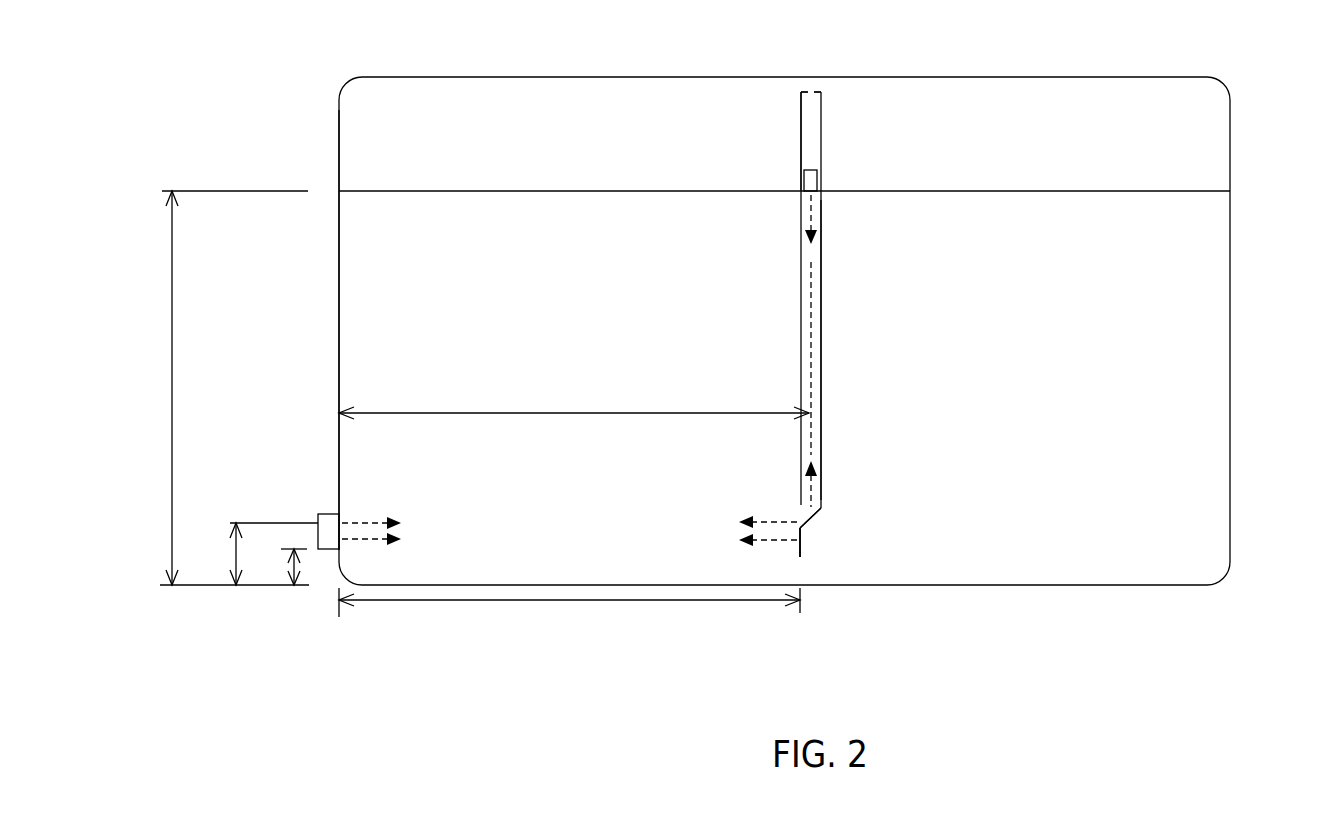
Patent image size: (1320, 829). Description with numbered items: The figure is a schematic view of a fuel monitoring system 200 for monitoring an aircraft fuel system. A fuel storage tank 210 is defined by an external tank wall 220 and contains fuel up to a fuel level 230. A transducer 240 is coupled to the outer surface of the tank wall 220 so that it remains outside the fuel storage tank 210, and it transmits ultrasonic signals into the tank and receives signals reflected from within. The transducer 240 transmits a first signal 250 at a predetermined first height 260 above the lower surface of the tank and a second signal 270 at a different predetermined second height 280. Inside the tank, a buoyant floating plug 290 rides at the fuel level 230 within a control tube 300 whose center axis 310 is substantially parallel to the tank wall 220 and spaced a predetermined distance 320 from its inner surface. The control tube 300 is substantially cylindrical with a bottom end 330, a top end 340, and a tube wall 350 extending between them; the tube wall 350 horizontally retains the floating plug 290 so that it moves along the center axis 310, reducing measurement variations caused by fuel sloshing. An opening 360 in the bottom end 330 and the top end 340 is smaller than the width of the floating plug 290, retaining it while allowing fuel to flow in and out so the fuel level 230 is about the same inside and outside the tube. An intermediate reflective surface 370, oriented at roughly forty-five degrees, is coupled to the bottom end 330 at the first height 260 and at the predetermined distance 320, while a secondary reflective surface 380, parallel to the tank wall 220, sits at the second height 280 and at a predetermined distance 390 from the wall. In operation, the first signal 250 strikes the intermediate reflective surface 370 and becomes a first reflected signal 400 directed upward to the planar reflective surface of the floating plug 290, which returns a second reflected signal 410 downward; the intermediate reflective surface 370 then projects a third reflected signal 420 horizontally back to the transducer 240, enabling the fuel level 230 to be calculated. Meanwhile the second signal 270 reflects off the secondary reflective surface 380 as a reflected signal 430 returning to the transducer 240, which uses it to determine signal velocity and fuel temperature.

The fuel monitoring system 200 is at (957, 646).
The fuel storage tank 210 is at (1255, 142).
The tank wall 220 is at (339, 133).
The fuel level 230 is at (556, 191).
The transducer 240 is at (323, 513).
The first signal 250 is at (370, 519).
The first height 260 is at (234, 555).
The second signal 270 is at (376, 545).
The second height 280 is at (294, 565).
The floating plug 290 is at (823, 180).
The control tube 300 is at (838, 124).
The center axis 310 is at (811, 337).
The predetermined distance 320 is at (574, 401).
The bottom end 330 is at (838, 507).
The top end 340 is at (792, 102).
The tube wall 350 is at (821, 280).
The opening 360 is at (814, 85).
The intermediate reflective surface 370 is at (808, 530).
The secondary reflective surface 380 is at (798, 548).
The predetermined distance 390 is at (569, 612).
The first reflected signal 400 is at (823, 480).
The second reflected signal 410 is at (815, 210).
The third reflected signal 420 is at (768, 517).
The reflected signal 430 is at (766, 541).